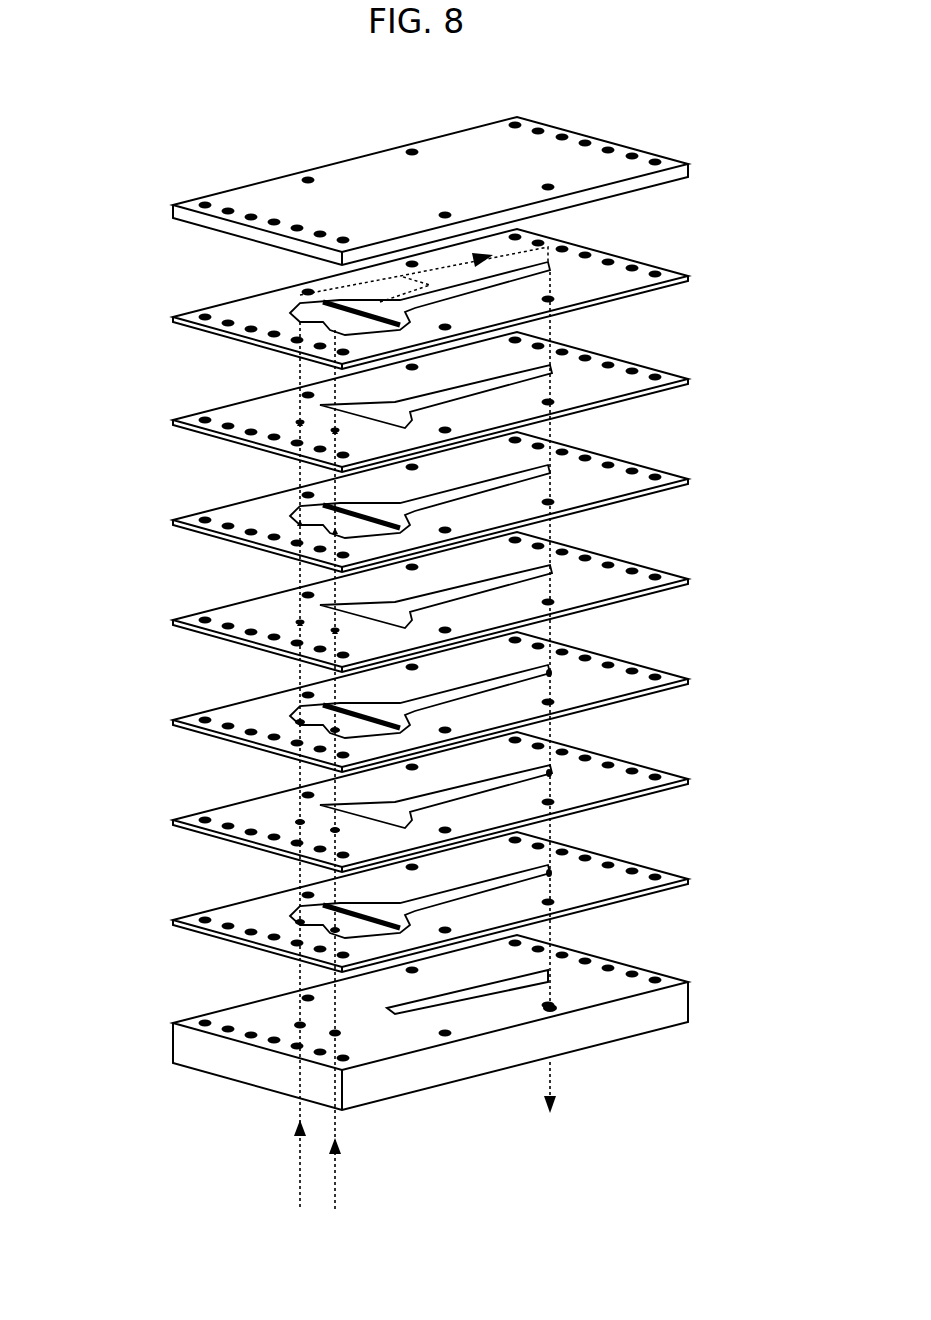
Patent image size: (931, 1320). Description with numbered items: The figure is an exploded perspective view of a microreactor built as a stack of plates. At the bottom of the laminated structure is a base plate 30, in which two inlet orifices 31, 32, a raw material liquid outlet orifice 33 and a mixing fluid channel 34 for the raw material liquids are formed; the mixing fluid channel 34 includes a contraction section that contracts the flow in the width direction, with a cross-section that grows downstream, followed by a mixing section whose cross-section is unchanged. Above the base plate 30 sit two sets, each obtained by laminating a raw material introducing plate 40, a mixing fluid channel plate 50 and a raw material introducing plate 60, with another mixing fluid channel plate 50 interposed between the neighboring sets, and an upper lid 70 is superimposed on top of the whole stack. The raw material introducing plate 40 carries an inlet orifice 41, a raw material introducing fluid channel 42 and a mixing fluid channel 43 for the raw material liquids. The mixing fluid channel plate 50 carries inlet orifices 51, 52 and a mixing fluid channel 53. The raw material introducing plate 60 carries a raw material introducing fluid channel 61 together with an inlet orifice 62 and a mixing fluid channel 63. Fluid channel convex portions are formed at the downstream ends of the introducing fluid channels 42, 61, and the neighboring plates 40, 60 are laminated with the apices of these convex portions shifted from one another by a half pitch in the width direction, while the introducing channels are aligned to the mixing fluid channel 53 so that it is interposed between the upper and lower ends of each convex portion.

The upper lid 70 is at (172, 206).
The raw material introducing plate 60 is at (173, 318).
The mixing fluid channel plate 50 is at (173, 420).
The raw material introducing plate 40 is at (173, 520).
The base plate 30 is at (185, 1050).
The mixing fluid channel 63 is at (548, 678).
The inlet orifice 62 is at (300, 722).
The raw material introducing fluid channel 61 is at (335, 730).
The mixing fluid channel 53 is at (548, 778).
The inlet orifice 52 is at (300, 822).
The inlet orifice 51 is at (335, 832).
The mixing fluid channel 43 is at (548, 878).
The raw material introducing fluid channel 42 is at (300, 924).
The inlet orifice 41 is at (335, 932).
The mixing fluid channel 34 is at (393, 1012).
The raw material liquid outlet orifice 33 is at (553, 990).
The inlet orifice 32 is at (300, 1028).
The inlet orifice 31 is at (335, 1037).